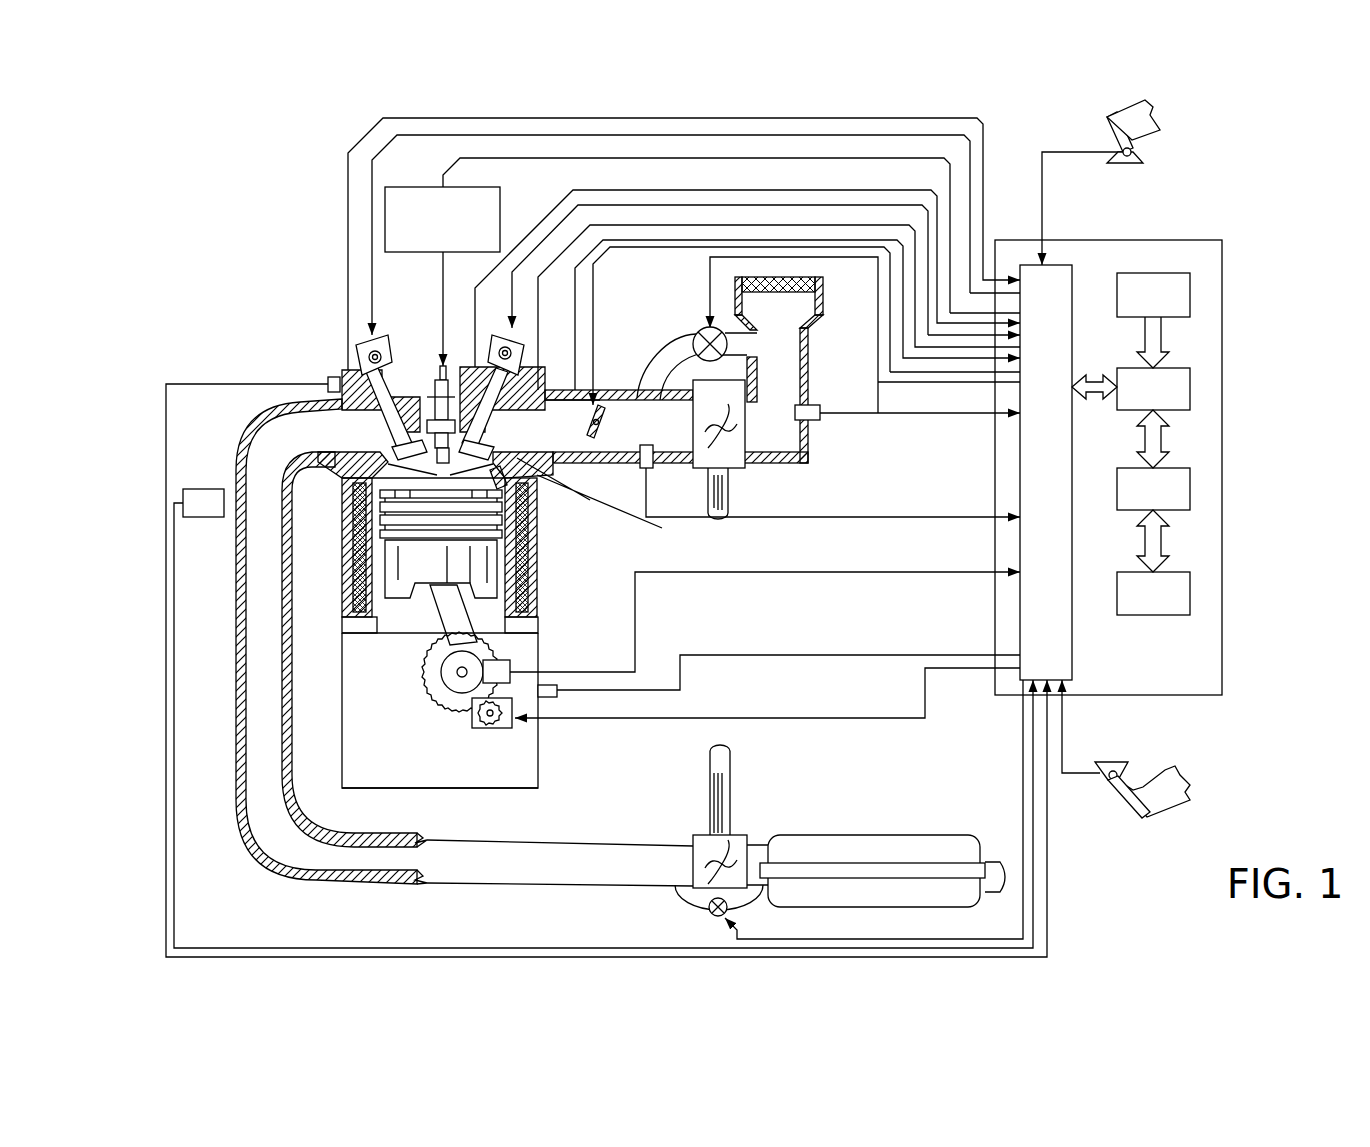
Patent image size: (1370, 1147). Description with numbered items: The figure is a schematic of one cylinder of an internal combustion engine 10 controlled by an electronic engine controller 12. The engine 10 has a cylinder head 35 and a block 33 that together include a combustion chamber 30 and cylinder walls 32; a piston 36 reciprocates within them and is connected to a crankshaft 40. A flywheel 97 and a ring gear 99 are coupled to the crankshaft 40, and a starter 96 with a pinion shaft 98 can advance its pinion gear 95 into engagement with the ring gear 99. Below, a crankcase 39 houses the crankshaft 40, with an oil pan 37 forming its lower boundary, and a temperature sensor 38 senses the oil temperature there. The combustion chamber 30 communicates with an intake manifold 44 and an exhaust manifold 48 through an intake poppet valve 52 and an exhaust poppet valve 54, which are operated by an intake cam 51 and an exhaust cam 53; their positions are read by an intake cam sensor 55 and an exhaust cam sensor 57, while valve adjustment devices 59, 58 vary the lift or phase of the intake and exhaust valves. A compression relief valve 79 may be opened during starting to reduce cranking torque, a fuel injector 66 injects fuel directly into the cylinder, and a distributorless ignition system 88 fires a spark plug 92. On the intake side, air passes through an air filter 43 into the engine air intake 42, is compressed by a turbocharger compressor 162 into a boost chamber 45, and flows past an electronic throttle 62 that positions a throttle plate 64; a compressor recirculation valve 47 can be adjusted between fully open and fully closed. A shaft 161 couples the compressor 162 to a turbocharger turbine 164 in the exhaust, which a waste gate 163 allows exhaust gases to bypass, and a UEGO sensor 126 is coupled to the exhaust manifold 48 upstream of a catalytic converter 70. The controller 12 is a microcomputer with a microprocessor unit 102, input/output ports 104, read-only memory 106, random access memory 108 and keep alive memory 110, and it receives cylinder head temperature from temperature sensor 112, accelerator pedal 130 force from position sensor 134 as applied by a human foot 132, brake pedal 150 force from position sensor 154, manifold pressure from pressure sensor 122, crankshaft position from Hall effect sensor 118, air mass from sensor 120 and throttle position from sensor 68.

The internal combustion engine 10 is at (272, 318).
The electronic engine controller 12 is at (1215, 240).
The combustion chamber 30 is at (440, 470).
The cylinder walls 32 is at (390, 615).
The engine block 33 is at (344, 507).
The cylinder head 35 is at (333, 370).
The piston 36 is at (425, 575).
The oil pan 37 is at (540, 770).
The temperature sensor 38 is at (558, 692).
The crankcase 39 is at (358, 715).
The crankshaft 40 is at (447, 697).
The engine air intake 42 is at (653, 297).
The air filter 43 is at (803, 290).
The intake manifold 44 is at (571, 436).
The boost chamber 45 is at (671, 436).
The compressor recirculation valve 47 is at (707, 327).
The exhaust manifold 48 is at (324, 441).
The intake cam 51 is at (495, 340).
The intake poppet valve 52 is at (478, 434).
The exhaust cam 53 is at (385, 343).
The exhaust poppet valve 54 is at (388, 443).
The intake cam sensor 55 is at (522, 360).
The exhaust cam sensor 57 is at (355, 358).
The valve adjustment device 58 is at (385, 355).
The valve adjustment device 59 is at (522, 350).
The electronic throttle 62 is at (603, 416).
The throttle plate 64 is at (596, 436).
The fuel injector 66 is at (589, 493).
The throttle position sensor 68 is at (576, 395).
The catalytic converter 70 is at (810, 835).
The compression relief valve 79 is at (452, 396).
The distributorless ignition system 88 is at (399, 186).
The spark plug 92 is at (439, 364).
The pinion gear 95 is at (492, 722).
The starter 96 is at (508, 728).
The flywheel 97 is at (435, 680).
The pinion shaft 98 is at (485, 722).
The ring gear 99 is at (462, 712).
The microprocessor unit 102 is at (1190, 385).
The input/output ports 104 is at (1073, 268).
The read-only memory 106 is at (1190, 290).
The random access memory 108 is at (1190, 490).
The keep alive memory 110 is at (1190, 595).
The temperature sensor 112 is at (326, 384).
The Hall effect sensor 118 is at (512, 660).
The air mass sensor 120 is at (818, 406).
The pressure sensor 122 is at (642, 467).
The UEGO sensor 126 is at (205, 488).
The accelerator pedal 130 is at (1107, 125).
The human foot 132 is at (1160, 105).
The position sensor 134 is at (1145, 152).
The brake pedal 150 is at (1142, 815).
The position sensor 154 is at (1100, 768).
The shaft 161 is at (708, 490).
The turbocharger compressor 162 is at (735, 455).
The waste gate 163 is at (712, 912).
The turbocharger turbine 164 is at (695, 835).